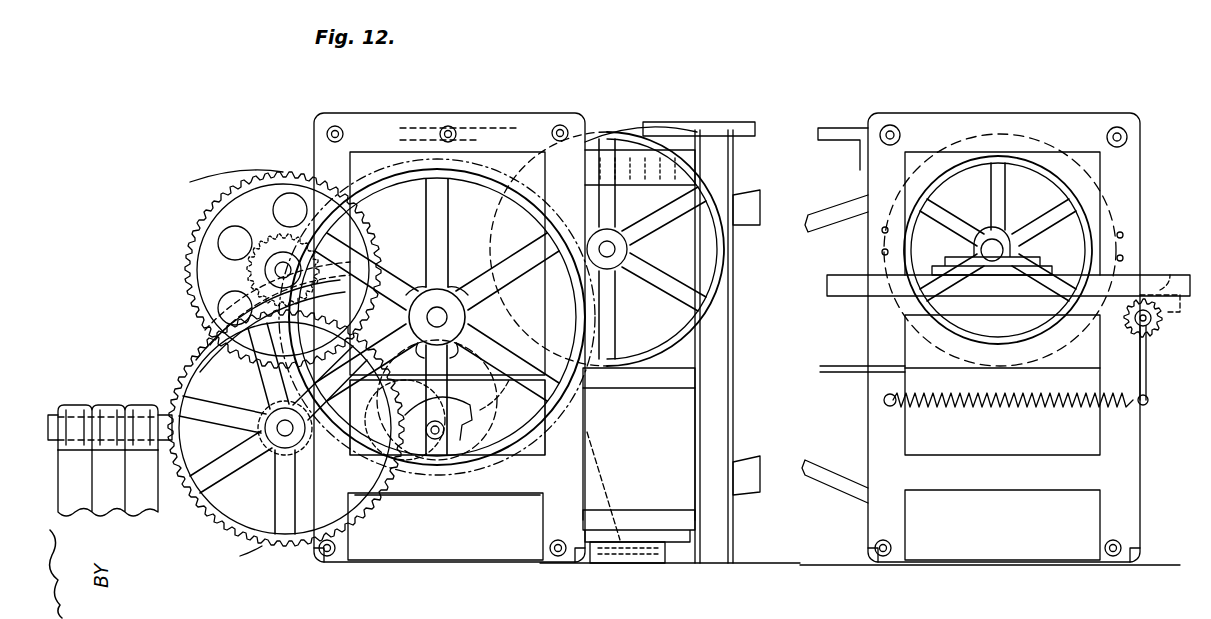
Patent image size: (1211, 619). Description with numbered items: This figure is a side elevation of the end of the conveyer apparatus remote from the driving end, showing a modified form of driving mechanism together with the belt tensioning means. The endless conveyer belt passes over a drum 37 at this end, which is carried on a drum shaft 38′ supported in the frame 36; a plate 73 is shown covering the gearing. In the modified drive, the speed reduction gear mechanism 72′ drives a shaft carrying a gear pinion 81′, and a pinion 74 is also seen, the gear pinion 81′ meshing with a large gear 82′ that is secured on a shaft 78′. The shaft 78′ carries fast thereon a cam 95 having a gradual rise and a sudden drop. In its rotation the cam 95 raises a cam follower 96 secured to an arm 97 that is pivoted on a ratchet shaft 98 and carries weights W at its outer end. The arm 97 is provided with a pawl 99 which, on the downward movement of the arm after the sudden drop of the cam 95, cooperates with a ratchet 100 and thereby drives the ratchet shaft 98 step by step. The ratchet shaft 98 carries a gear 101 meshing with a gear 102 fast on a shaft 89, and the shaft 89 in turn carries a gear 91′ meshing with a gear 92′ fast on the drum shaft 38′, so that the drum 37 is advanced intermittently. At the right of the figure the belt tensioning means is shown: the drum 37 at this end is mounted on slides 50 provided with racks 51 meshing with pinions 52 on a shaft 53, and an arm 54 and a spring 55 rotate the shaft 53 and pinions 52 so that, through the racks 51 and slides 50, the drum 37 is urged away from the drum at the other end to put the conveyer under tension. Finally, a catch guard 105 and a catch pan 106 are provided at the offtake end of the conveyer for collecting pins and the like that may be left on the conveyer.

The side plate 73 is at (508, 126).
The drum 37 is at (615, 135).
The speed reduction gear mechanism 72′ is at (296, 178).
The gear pinion 81′ is at (268, 178).
The pinion 74 is at (261, 270).
The gear 102 is at (480, 242).
The drum shaft 38′ is at (630, 248).
The gear 92′ is at (628, 272).
The cam follower 96 is at (205, 328).
The cam 95 is at (196, 356).
The weights W is at (105, 430).
The shaft 89 is at (450, 400).
The arm 97 is at (442, 404).
The ratchet shaft 98 is at (474, 412).
The gear 91′ is at (578, 412).
The frame 36 is at (718, 426).
The ratchet 100 is at (456, 410).
The pawl 99 is at (392, 452).
The shaft 78′ is at (222, 508).
The gear 101 is at (438, 497).
The catch guard 105 is at (600, 494).
The catch pan 106 is at (625, 560).
The large gear 82′ is at (262, 546).
The slides 50 is at (852, 290).
The pinions 52 is at (1100, 330).
The racks 51 is at (1155, 314).
The shaft 53 is at (1159, 363).
The arm 54 is at (1150, 400).
The spring 55 is at (1058, 410).